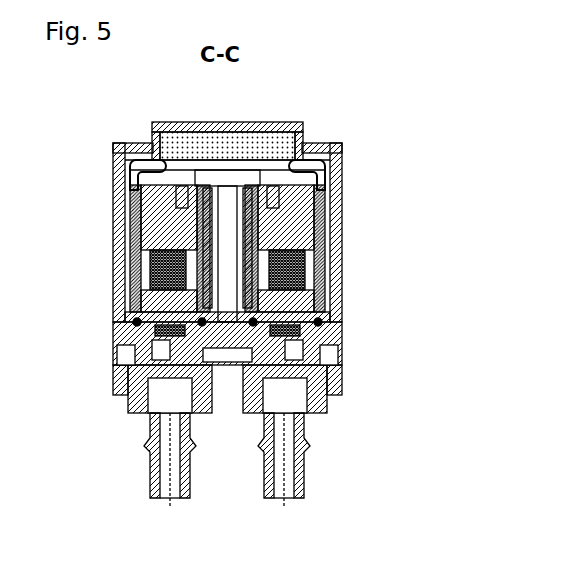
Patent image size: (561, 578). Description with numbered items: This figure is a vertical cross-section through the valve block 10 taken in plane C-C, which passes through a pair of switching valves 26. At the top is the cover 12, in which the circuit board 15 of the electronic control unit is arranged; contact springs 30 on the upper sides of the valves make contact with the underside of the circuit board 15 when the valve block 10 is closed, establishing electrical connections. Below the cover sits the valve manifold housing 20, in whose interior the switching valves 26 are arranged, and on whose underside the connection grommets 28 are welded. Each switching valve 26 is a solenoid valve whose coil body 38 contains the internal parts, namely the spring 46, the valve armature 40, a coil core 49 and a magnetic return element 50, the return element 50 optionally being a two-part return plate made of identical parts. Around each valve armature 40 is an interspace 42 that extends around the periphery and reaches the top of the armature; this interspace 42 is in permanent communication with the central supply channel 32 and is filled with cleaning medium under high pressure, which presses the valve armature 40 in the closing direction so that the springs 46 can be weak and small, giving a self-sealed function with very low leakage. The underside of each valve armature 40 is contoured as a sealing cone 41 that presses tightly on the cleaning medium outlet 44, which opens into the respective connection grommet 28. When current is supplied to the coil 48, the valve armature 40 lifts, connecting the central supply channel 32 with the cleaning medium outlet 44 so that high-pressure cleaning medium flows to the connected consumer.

The valve block 10 is at (350, 100).
The cover 12 is at (313, 140).
The circuit board 15 is at (252, 172).
The valve manifold housing 20 is at (336, 205).
The switching valve 26 is at (140, 250).
The connection grommet 28 is at (162, 478).
The contact spring 30 is at (135, 178).
The central supply channel 32 is at (140, 347).
The coil body 38 is at (323, 238).
The valve armature 40 is at (138, 320).
The sealing cone 41 is at (150, 340).
The interspace 42 is at (145, 290).
The cleaning medium outlet 44 is at (130, 372).
The spring 46 is at (150, 268).
The coil 48 is at (130, 222).
The coil core 49 is at (182, 186).
The magnetic return element 50 is at (247, 188).